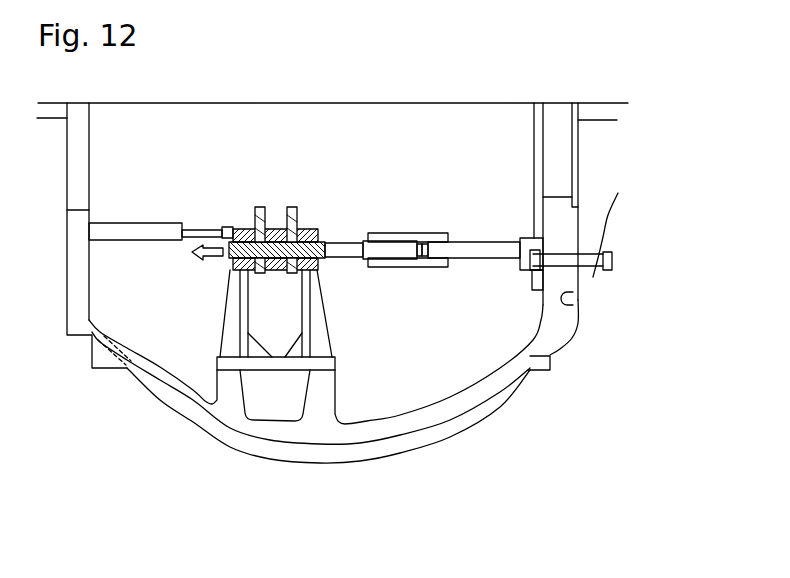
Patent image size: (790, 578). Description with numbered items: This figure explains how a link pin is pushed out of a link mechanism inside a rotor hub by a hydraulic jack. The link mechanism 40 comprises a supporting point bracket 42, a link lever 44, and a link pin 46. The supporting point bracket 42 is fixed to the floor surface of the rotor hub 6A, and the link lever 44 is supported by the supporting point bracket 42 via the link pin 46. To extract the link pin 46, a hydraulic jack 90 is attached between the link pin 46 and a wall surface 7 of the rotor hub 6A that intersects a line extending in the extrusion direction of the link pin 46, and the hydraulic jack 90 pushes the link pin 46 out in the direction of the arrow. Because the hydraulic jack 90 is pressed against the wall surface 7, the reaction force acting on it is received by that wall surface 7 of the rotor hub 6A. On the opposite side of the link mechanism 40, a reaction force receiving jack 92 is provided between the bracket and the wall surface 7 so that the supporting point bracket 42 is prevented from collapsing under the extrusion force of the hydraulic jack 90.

The wall surface of the rotor hub 7 is at (92, 118).
The reaction force receiving jack 92 is at (150, 222).
The link lever 44 is at (292, 207).
The link mechanism 40 is at (288, 233).
The supporting point bracket 42 is at (317, 230).
The hydraulic jack 90 is at (427, 233).
The link pin 46 is at (230, 263).
The rotor hub 6A is at (386, 478).